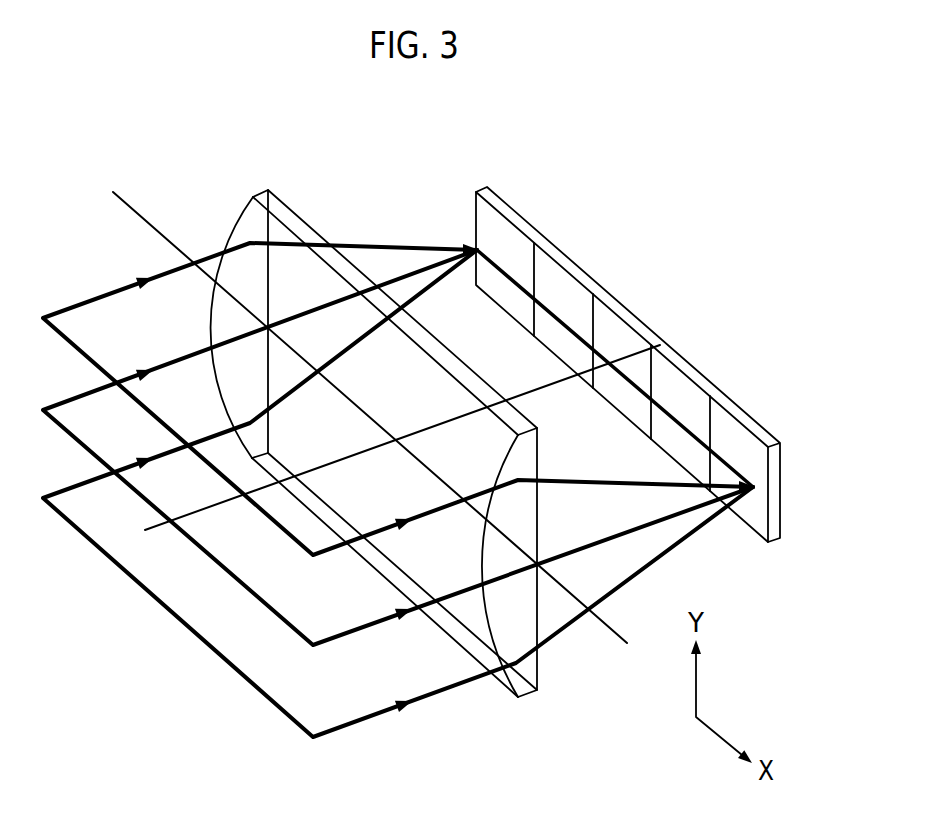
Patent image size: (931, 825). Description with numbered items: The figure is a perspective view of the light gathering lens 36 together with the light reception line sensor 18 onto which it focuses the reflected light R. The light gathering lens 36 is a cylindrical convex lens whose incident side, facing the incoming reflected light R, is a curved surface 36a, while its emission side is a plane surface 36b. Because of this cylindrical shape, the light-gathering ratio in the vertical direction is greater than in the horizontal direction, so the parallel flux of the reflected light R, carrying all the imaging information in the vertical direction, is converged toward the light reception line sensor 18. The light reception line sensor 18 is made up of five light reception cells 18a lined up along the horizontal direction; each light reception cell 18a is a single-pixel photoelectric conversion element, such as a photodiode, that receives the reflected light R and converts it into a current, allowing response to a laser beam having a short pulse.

The light gathering lens 36 is at (385, 446).
The curved surface 36a is at (230, 237).
The plane surface 36b is at (538, 669).
The light reception line sensor 18 is at (628, 344).
The light reception cell 18a is at (512, 237).
The reflected light R is at (90, 297).